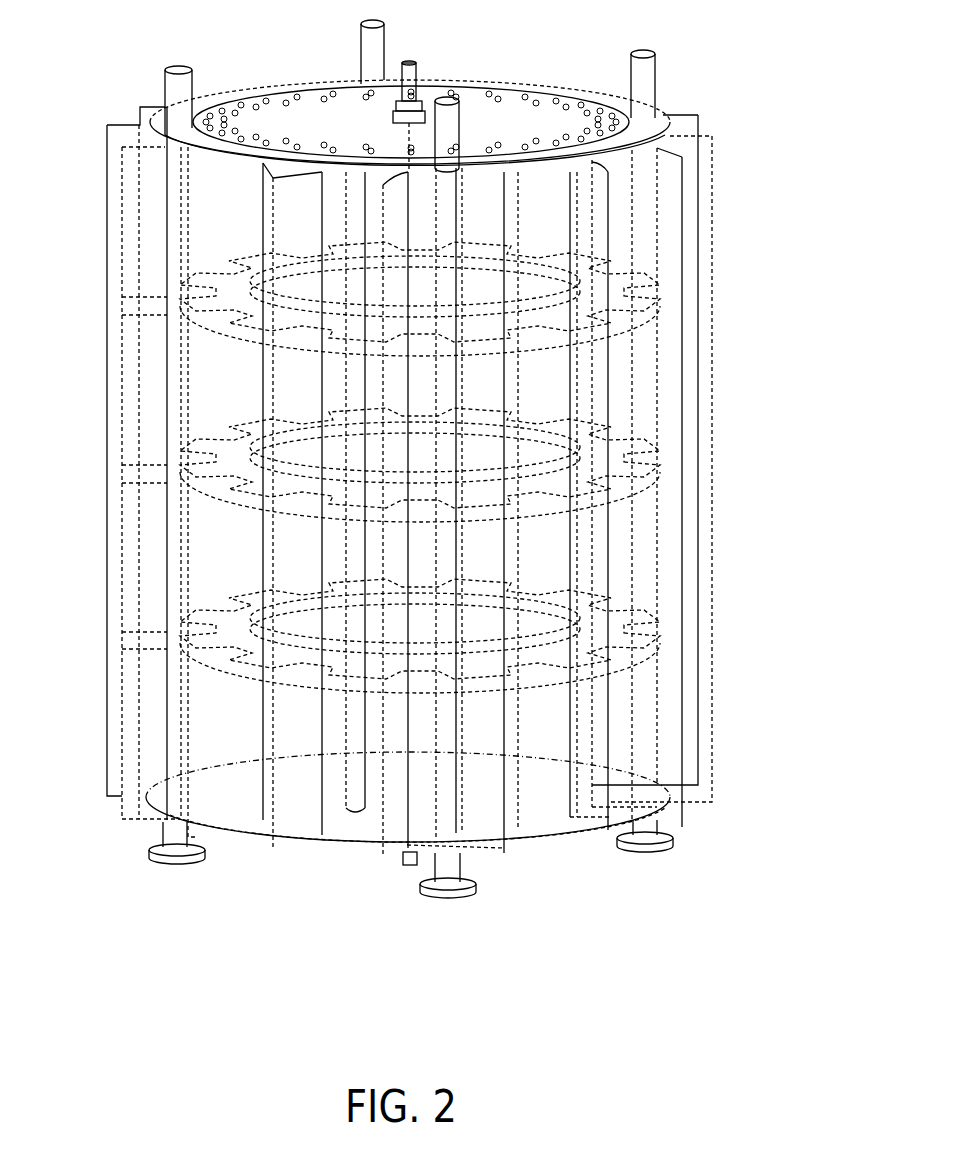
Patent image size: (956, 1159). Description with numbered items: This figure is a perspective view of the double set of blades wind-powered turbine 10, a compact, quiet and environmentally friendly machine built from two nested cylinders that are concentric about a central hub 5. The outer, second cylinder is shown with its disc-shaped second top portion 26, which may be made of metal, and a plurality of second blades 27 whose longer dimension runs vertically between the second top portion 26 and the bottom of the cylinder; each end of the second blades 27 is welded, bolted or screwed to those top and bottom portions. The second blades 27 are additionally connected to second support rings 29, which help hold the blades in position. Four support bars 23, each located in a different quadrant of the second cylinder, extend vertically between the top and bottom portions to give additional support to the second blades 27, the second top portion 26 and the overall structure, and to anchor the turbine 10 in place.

The wind-powered turbine 10 is at (786, 318).
The central hub 5 is at (412, 62).
The support bars 23 is at (165, 82).
The second top portion 26 is at (272, 118).
The second blades 27 is at (132, 608).
The second support rings 29 is at (132, 482).